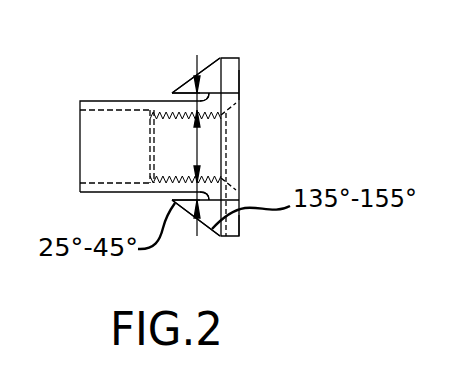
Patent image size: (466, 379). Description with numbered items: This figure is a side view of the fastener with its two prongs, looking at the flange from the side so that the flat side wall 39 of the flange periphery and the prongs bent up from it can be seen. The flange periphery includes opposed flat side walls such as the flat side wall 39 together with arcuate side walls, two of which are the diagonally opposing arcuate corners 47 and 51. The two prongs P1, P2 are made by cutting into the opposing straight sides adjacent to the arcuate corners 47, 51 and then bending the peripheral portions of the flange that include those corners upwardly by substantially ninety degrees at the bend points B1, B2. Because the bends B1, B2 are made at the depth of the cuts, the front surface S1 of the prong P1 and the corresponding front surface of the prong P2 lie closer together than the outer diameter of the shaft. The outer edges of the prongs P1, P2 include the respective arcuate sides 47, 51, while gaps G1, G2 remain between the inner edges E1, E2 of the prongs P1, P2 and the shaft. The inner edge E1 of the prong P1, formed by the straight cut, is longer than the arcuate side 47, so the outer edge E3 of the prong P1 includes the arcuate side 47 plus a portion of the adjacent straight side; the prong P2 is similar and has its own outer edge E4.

The flat side wall 39 is at (236, 135).
The arcuate side wall 51 is at (170, 53).
The outer edge of prong P2 E4 is at (190, 74).
The arcuate side wall 47 is at (166, 244).
The outer edge of prong P1 E3 is at (187, 214).
The prong P2 is at (200, 62).
The prong P1 is at (236, 220).
The front surface of prong P1 S1 is at (210, 212).
The gap G2 is at (206, 93).
The gap G1 is at (173, 199).
The inner edge of prong P2 E2 is at (174, 94).
The inner edge of prong P1 E1 is at (208, 193).
The bend B2 is at (242, 84).
The bend B1 is at (243, 229).